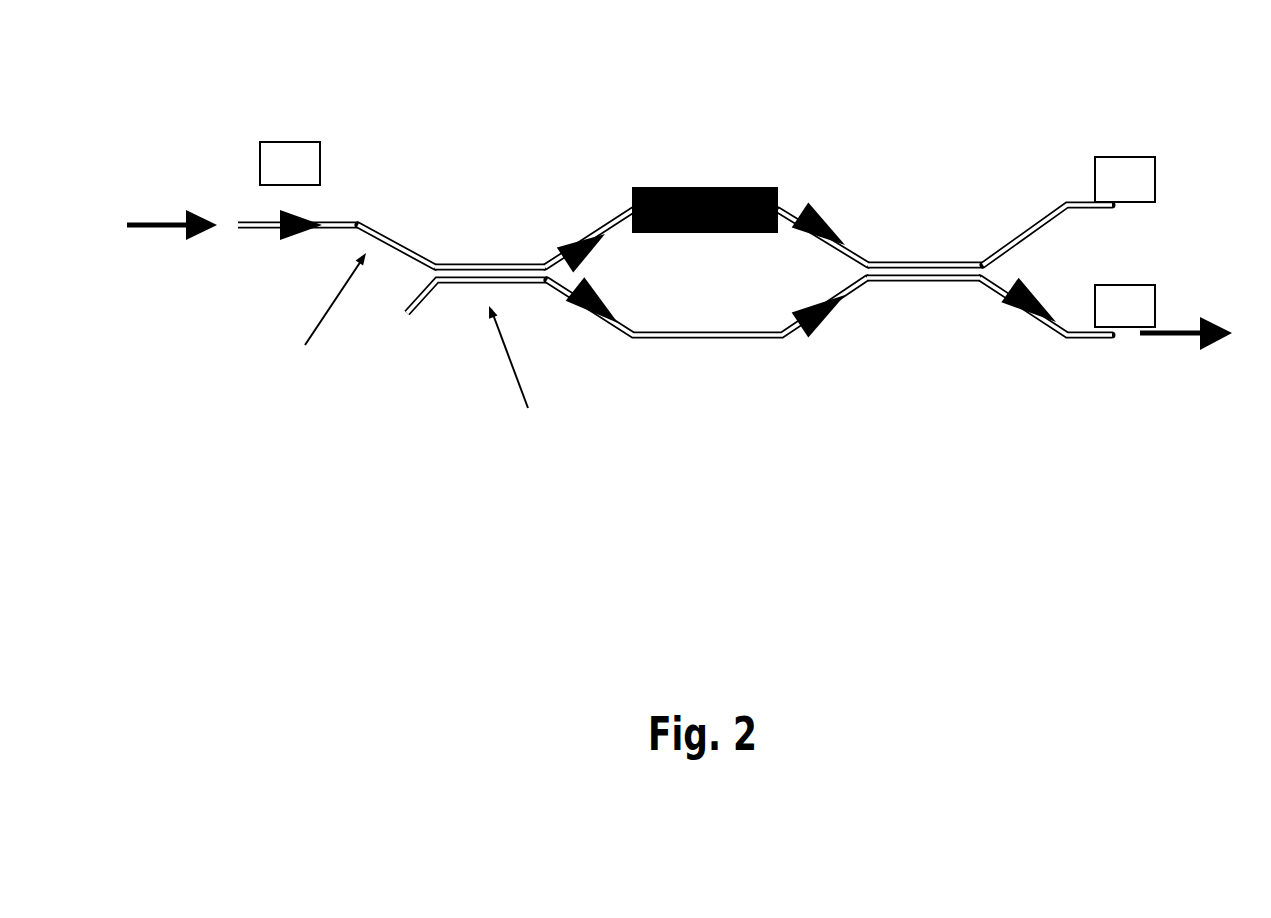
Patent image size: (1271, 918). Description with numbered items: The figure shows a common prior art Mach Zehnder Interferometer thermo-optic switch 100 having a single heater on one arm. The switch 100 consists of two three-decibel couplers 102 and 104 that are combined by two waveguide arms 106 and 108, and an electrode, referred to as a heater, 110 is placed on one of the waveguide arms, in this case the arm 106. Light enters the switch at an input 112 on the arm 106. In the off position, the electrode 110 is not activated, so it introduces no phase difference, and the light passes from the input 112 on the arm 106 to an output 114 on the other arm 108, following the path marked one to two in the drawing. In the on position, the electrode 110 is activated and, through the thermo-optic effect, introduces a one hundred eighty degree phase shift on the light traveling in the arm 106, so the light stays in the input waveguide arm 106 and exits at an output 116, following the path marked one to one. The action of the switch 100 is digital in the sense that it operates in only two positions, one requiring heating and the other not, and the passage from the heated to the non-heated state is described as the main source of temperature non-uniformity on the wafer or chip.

The thermo-optic switch 100 is at (493, 98).
The 3 dB coupler 102 is at (476, 266).
The 3 dB coupler 104 is at (930, 265).
The waveguide arm 106 is at (383, 238).
The waveguide arm 108 is at (848, 290).
The electrode (heater) 110 is at (758, 187).
The input 112 is at (255, 222).
The output 114 is at (1150, 285).
The output 116 is at (1148, 157).